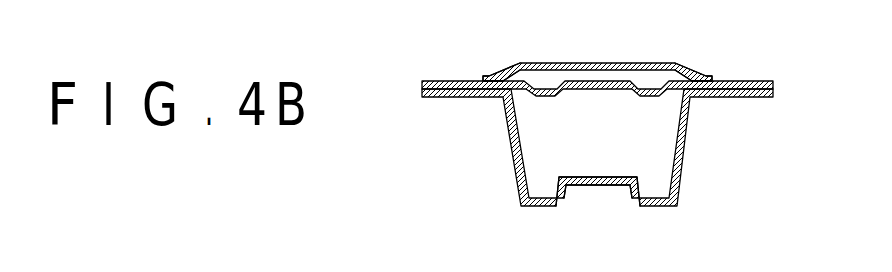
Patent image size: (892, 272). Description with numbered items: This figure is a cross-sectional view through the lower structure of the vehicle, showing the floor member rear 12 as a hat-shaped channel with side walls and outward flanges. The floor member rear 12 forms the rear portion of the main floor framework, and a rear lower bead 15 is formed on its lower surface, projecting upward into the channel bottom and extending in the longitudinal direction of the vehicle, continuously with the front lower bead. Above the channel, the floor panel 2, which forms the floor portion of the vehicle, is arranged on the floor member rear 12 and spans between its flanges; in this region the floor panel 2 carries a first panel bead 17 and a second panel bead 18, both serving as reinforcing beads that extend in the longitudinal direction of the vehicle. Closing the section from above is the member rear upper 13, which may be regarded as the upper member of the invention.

The floor panel 2 is at (590, 89).
The floor member rear 12 is at (512, 157).
The member rear upper 13 is at (630, 44).
The rear lower bead 15 is at (590, 184).
The first panel bead 17 is at (551, 80).
The second panel bead 18 is at (660, 64).